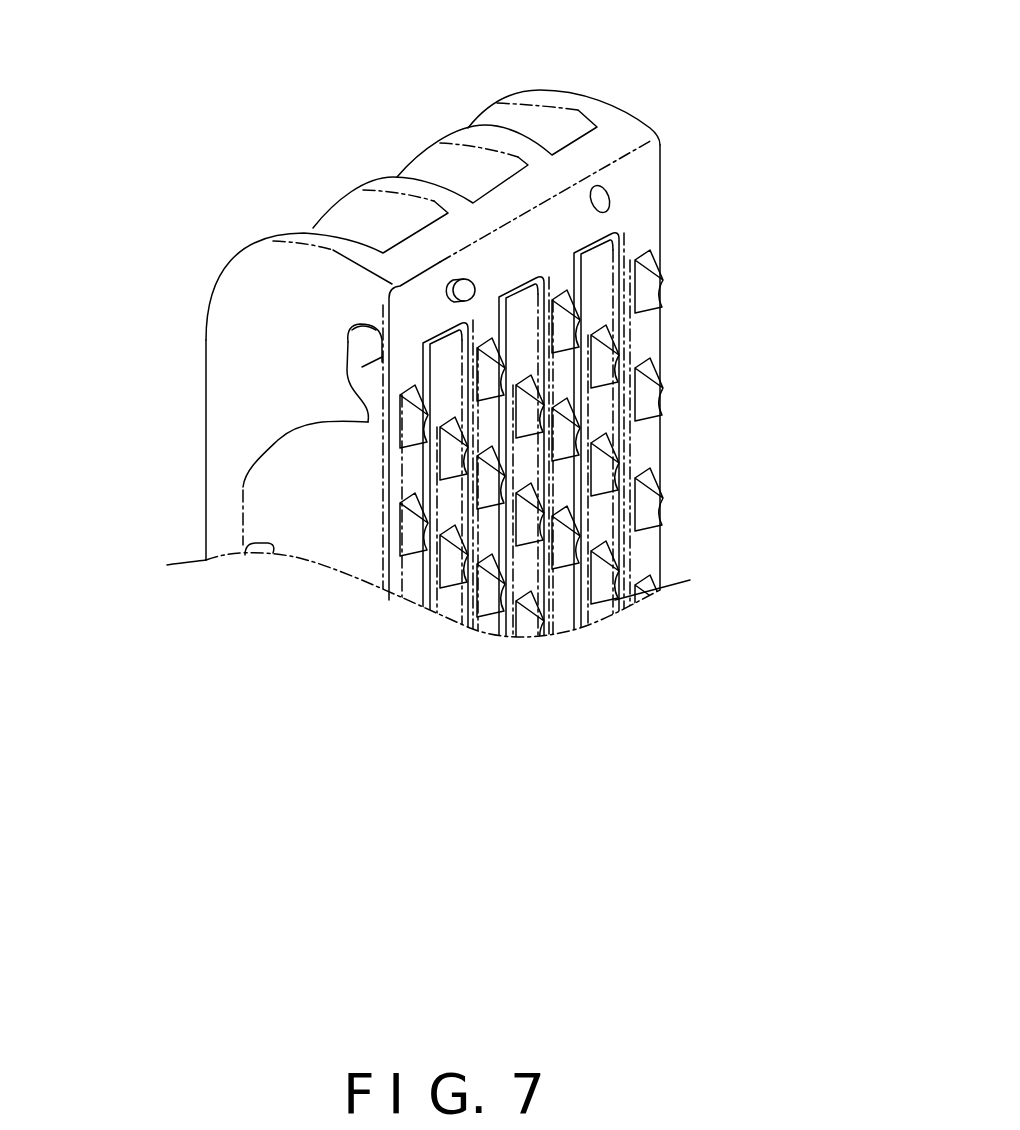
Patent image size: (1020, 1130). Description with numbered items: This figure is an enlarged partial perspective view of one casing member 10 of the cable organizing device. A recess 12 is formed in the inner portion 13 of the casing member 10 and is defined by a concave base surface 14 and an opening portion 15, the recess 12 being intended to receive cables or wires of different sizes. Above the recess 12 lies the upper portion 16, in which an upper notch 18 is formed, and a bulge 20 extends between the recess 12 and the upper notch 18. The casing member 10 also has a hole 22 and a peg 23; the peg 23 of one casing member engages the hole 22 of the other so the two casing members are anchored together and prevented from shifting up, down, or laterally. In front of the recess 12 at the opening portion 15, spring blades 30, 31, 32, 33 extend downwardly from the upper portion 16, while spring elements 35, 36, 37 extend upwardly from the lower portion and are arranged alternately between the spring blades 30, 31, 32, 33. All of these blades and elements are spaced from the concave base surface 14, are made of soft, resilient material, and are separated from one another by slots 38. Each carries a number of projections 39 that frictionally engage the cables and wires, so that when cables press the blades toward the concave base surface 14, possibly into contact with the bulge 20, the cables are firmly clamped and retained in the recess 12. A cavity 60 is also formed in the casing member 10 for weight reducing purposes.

The casing member 10 is at (240, 297).
The recess 12 is at (243, 483).
The inner portion 13 is at (654, 162).
The concave base surface 14 is at (270, 555).
The opening portion 15 is at (354, 561).
The upper portion 16 is at (340, 312).
The upper notch 18 is at (357, 345).
The bulge 20 is at (367, 410).
The hole 22 is at (609, 199).
The peg 23 is at (448, 288).
The spring blade 30 is at (398, 583).
The spring blade 31 is at (483, 627).
The spring blade 32 is at (557, 612).
The spring blade 33 is at (640, 553).
The spring element 35 is at (437, 602).
The spring element 36 is at (522, 318).
The spring element 37 is at (597, 620).
The slot 38 is at (560, 503).
The projection 39 is at (563, 340).
The cavity 60 is at (546, 122).